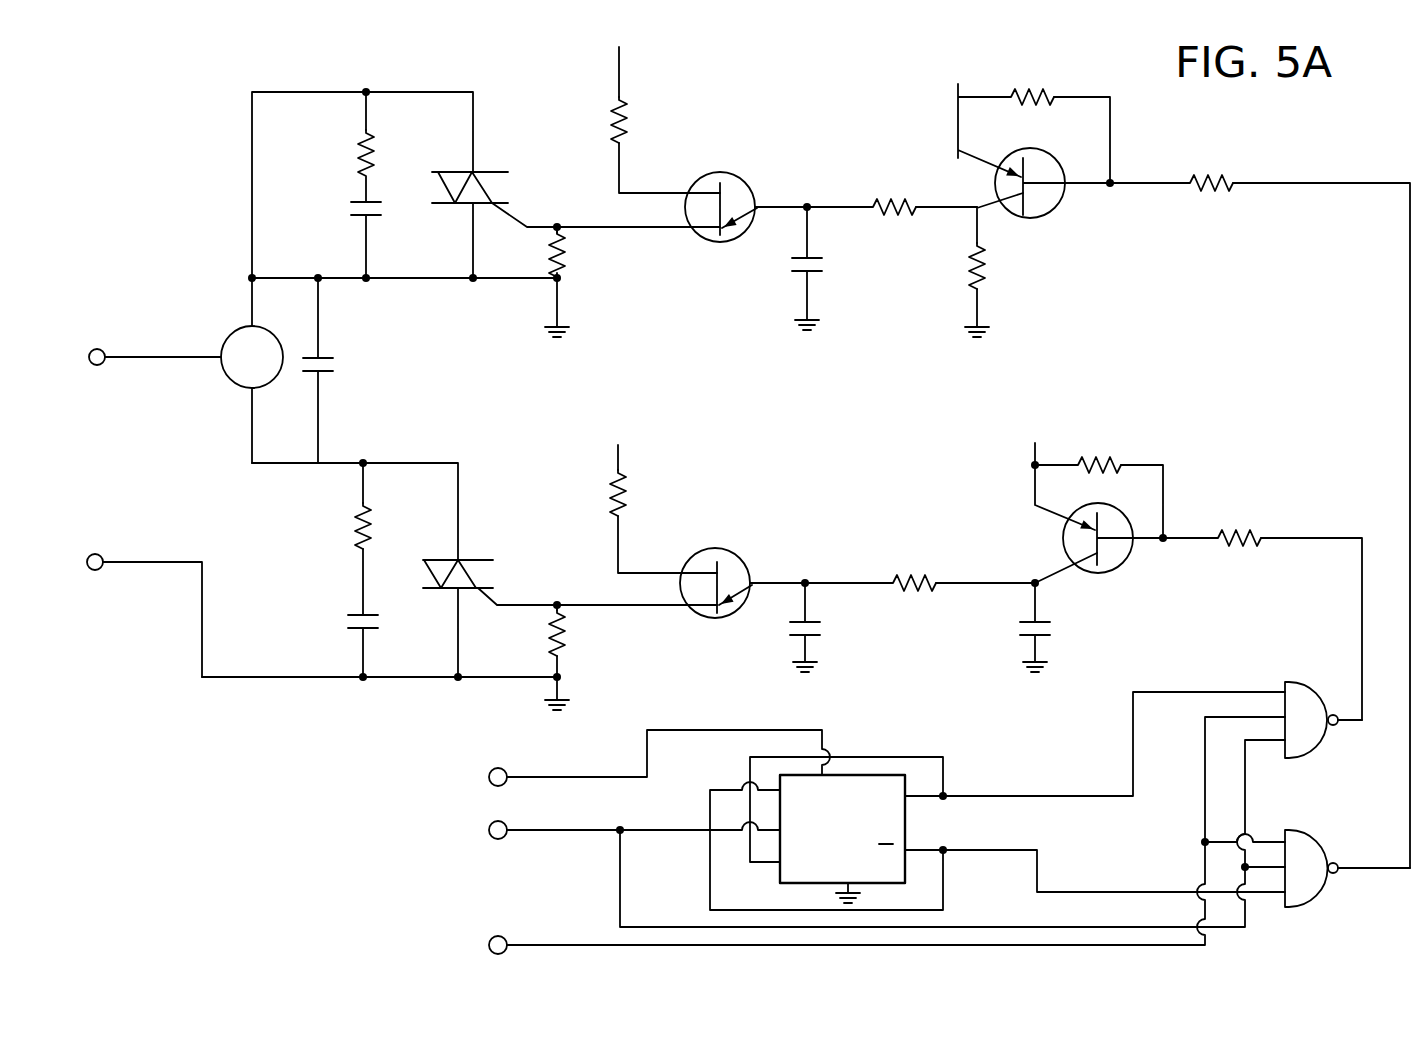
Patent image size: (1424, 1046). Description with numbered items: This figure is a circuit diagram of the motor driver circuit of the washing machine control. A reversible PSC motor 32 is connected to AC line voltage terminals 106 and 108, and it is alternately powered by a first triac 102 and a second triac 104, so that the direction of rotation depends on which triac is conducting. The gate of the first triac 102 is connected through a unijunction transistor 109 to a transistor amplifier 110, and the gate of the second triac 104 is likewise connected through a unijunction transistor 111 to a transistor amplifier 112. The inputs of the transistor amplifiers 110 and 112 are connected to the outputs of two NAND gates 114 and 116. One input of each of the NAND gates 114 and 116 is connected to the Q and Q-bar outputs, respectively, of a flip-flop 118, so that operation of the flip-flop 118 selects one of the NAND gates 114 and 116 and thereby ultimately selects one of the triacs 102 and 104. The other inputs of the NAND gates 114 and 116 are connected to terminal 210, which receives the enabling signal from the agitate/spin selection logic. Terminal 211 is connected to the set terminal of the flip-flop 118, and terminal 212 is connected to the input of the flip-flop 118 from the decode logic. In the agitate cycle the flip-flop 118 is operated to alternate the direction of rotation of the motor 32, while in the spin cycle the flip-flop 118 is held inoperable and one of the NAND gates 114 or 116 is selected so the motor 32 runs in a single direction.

The reversible PSC motor 32 is at (234, 326).
The first triac 102 is at (508, 190).
The second triac 104 is at (493, 578).
The AC line voltage terminal 106 is at (110, 336).
The AC line voltage terminal 108 is at (100, 554).
The unijunction transistor 109 is at (748, 188).
The transistor amplifier 110 is at (1060, 197).
The unijunction transistor 111 is at (744, 564).
The transistor amplifier 112 is at (1130, 550).
The NAND gate 114 is at (1308, 682).
The NAND gate 116 is at (1318, 840).
The flip-flop 118 is at (861, 775).
The terminal 210 is at (494, 940).
The terminal 211 is at (489, 776).
The terminal 212 is at (489, 829).